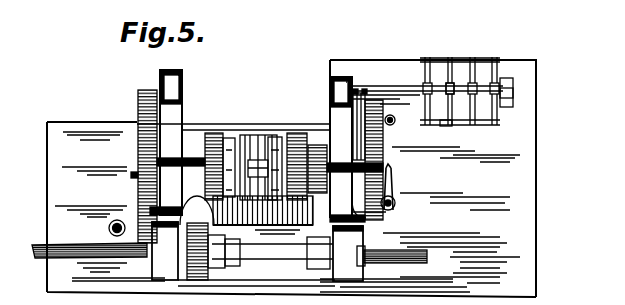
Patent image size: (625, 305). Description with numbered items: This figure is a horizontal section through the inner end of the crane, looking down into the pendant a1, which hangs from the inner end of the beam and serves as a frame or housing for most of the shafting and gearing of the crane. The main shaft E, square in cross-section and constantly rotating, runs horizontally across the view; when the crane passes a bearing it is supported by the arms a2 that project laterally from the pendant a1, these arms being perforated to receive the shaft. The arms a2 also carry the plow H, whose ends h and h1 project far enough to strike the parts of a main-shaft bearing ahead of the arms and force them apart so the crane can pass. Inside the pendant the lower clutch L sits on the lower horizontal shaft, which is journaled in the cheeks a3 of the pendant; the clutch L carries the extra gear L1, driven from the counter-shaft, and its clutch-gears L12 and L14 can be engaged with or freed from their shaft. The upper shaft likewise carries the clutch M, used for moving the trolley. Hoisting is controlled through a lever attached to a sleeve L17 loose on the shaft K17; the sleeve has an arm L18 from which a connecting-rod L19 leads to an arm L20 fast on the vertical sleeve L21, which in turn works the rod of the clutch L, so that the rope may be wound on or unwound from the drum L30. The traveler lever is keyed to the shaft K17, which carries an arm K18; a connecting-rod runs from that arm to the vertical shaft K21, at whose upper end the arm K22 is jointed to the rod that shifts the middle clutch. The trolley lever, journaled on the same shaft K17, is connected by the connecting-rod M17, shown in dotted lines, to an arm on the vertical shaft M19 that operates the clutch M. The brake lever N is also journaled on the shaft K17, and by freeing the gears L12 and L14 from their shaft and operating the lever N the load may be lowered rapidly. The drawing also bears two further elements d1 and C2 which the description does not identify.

The pendant a1 is at (257, 146).
The arms a2 is at (257, 251).
The cheeks a3 is at (262, 101).
The lever N is at (315, 150).
The lower clutch L is at (282, 155).
The gear L1 is at (364, 146).
The clutch-gear L12 is at (210, 131).
The clutch-gear L14 is at (303, 131).
The sleeve L17 is at (410, 90).
The arm L18 is at (420, 78).
The connecting-rod L19 is at (398, 108).
The arm L20 is at (366, 228).
The vertical sleeve L21 is at (391, 211).
The drum L30 is at (263, 218).
The upper clutch M is at (443, 98).
The connecting-rod M17 is at (445, 128).
The vertical shaft M19 is at (391, 125).
The shaft K17 is at (505, 93).
The arm K18 is at (356, 143).
The vertical shaft K21 is at (396, 205).
The arm K22 is at (391, 184).
The main shaft E is at (235, 253).
The end of plow h is at (113, 279).
The end of plow h1 is at (387, 280).
The plow H is at (256, 288).
The gear d1 is at (193, 284).
The shaft C2 is at (287, 249).